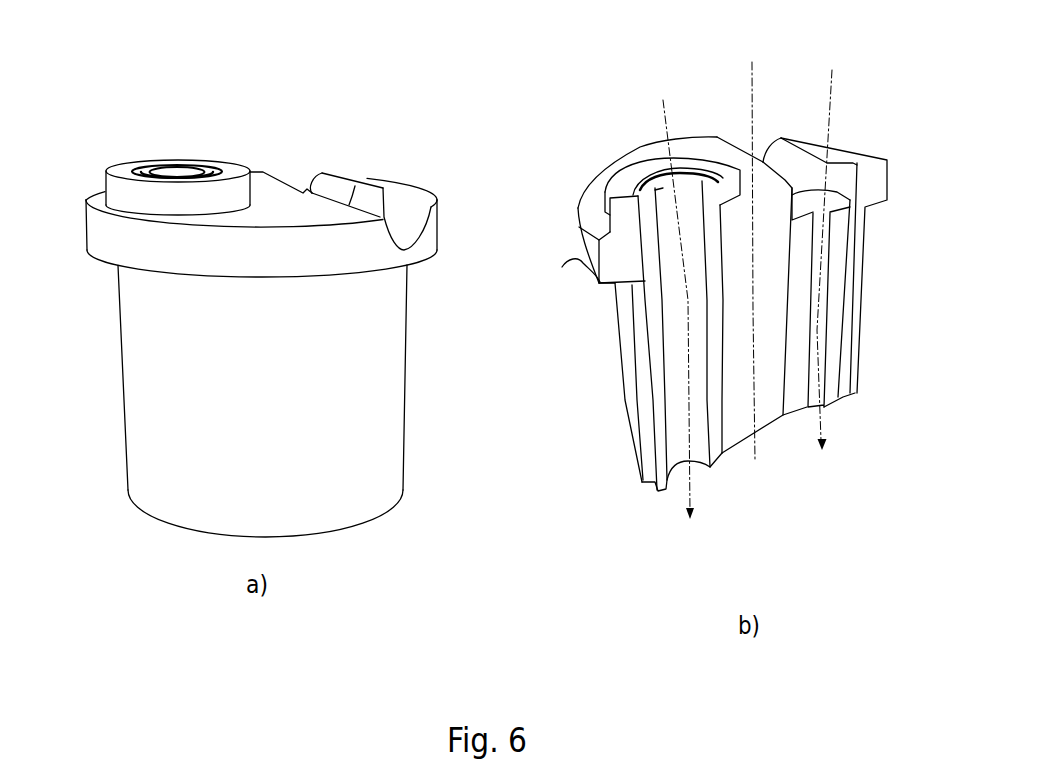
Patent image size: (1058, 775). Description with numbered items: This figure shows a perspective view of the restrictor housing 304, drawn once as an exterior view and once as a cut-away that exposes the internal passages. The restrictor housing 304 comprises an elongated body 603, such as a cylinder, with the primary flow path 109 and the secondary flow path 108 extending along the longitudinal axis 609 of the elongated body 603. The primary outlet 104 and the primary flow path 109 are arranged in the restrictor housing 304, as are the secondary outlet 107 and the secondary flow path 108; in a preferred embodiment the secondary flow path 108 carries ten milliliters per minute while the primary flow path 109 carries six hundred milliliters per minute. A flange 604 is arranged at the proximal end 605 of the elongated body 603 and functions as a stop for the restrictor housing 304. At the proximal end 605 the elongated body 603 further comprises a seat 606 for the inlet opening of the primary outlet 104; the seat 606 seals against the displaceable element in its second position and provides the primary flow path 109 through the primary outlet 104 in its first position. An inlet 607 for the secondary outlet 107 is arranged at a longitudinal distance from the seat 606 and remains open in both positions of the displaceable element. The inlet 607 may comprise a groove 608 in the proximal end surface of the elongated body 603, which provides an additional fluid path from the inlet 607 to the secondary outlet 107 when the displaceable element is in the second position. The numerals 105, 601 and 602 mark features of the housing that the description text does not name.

The restrictor housing 304 is at (272, 96).
The proximal end 605 is at (359, 122).
The seat 606 is at (120, 163).
The outlet opening 105 is at (177, 162).
The inlet 607 is at (388, 184).
The groove 608 is at (410, 231).
The flange 604 is at (116, 264).
The elongated body 603 is at (409, 365).
The longitudinal axis 609 is at (754, 72).
The secondary flow path 108 is at (817, 425).
The secondary outlet 107 is at (845, 441).
The inlet passage 602 is at (797, 418).
The primary flow path 109 is at (690, 487).
The primary outlet 104 is at (710, 531).
The outlet tube 601 is at (657, 491).